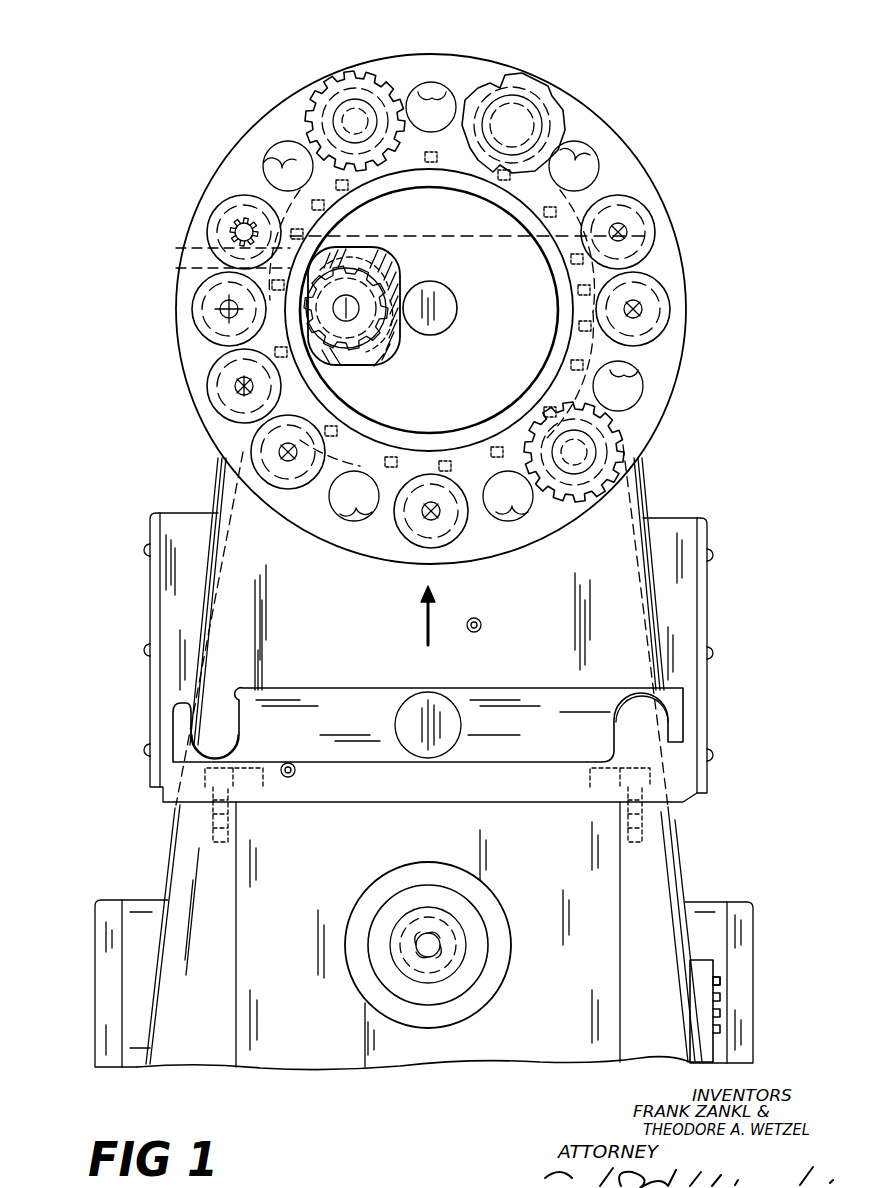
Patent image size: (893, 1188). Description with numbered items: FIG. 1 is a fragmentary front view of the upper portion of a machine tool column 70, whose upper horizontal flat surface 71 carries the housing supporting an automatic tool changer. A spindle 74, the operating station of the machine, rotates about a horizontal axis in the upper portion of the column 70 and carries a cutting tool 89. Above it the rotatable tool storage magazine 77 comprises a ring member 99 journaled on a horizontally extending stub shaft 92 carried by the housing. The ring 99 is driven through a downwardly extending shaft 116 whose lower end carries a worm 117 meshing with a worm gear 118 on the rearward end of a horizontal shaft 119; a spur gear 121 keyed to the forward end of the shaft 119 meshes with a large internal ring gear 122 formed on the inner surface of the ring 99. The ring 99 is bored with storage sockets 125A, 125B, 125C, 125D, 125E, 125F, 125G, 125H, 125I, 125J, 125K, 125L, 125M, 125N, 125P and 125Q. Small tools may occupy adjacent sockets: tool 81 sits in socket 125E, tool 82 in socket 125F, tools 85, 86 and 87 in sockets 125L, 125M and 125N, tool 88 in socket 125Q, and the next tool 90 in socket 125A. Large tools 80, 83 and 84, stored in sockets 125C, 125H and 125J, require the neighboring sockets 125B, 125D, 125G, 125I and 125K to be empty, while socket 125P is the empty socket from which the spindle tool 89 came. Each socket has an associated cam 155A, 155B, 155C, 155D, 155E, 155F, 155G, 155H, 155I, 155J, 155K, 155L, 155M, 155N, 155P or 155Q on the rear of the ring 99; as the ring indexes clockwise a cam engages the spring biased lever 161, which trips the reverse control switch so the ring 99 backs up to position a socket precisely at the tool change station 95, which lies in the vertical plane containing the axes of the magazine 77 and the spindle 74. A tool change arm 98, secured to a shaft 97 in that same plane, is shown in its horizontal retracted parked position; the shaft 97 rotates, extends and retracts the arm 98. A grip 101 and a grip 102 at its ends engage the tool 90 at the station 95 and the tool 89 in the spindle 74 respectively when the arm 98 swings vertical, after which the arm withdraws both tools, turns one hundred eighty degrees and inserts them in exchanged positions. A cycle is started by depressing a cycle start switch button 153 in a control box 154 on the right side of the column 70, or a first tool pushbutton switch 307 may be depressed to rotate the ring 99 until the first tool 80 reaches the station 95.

The column 70 is at (662, 883).
The upper horizontal flat surface 71 is at (512, 789).
The spindle 74 is at (496, 962).
The tool storage magazine 77 is at (115, 466).
The tool 80 is at (620, 447).
The tool 81 is at (645, 320).
The tool 82 is at (630, 237).
The tool 83 is at (548, 101).
The tool 84 is at (366, 79).
The tool 85 is at (238, 231).
The tool 86 is at (226, 308).
The tool 87 is at (238, 386).
The tool 88 is at (283, 455).
The cutting tool 89 is at (452, 938).
The tool 90 is at (423, 520).
The shaft 92 is at (446, 300).
The tool change station 95 is at (415, 616).
The shaft 97 is at (453, 711).
The tool change arm 98 is at (302, 697).
The ring member 99 is at (459, 66).
The grip 101 is at (172, 710).
The grip 102 is at (648, 726).
The downwardly extending shaft 116 is at (378, 271).
The worm 117 is at (393, 302).
The worm gear 118 is at (336, 262).
The horizontal shaft 119 is at (362, 334).
The spur gear 121 is at (352, 322).
The internal ring gear 122 is at (339, 364).
The storage socket 125A is at (448, 556).
The storage socket 125B is at (527, 513).
The storage socket 125C is at (621, 482).
The storage socket 125D is at (645, 383).
The storage socket 125E is at (668, 300).
The storage socket 125F is at (648, 218).
The storage socket 125G is at (589, 151).
The storage socket 125H is at (536, 72).
The storage socket 125I is at (436, 93).
The storage socket 125J is at (353, 100).
The storage socket 125K is at (268, 176).
The storage socket 125L is at (226, 243).
The storage socket 125M is at (200, 318).
The storage socket 125N is at (215, 396).
The storage socket 125P is at (356, 506).
The storage socket 125Q is at (273, 474).
The cycle start switch button 153 is at (722, 985).
The control box 154 is at (701, 975).
The cam 155A is at (578, 326).
The cam 155B is at (571, 261).
The cam 155C is at (544, 214).
The cam 155D is at (499, 177).
The cam 155E is at (431, 152).
The cam 155F is at (349, 188).
The cam 155G is at (351, 207).
The cam 155H is at (297, 228).
The cam 155I is at (272, 284).
The cam 155J is at (200, 353).
The cam 155K is at (333, 438).
The cam 155L is at (389, 455).
The cam 155M is at (450, 467).
The cam 155N is at (494, 446).
The cam 155P is at (571, 366).
The cam 155Q is at (545, 410).
The spring biased lever 161 is at (579, 291).
The first tool pushbutton switch 307 is at (722, 1003).